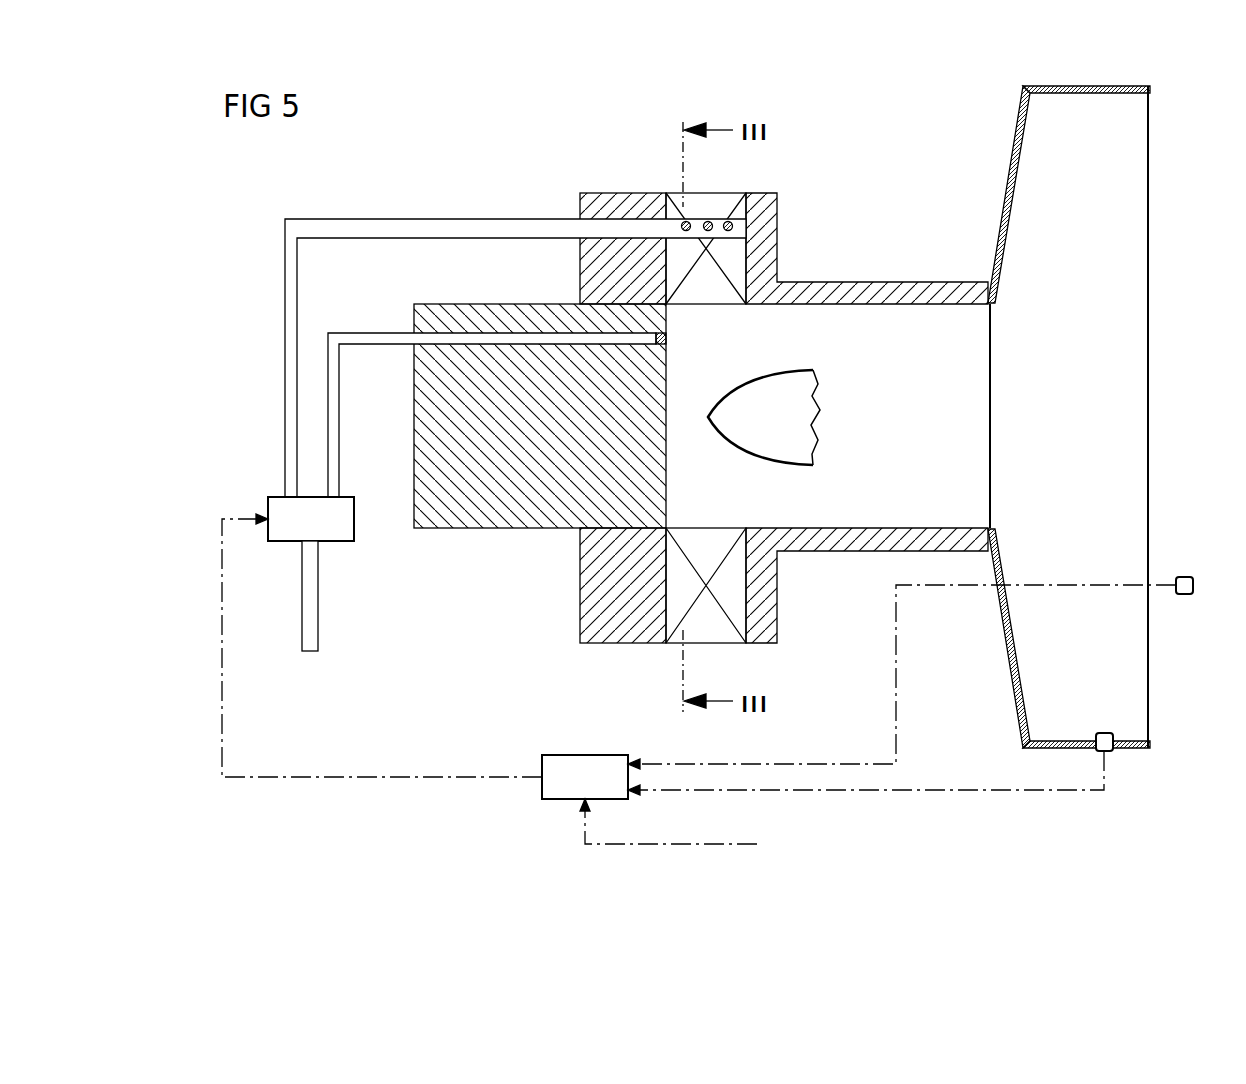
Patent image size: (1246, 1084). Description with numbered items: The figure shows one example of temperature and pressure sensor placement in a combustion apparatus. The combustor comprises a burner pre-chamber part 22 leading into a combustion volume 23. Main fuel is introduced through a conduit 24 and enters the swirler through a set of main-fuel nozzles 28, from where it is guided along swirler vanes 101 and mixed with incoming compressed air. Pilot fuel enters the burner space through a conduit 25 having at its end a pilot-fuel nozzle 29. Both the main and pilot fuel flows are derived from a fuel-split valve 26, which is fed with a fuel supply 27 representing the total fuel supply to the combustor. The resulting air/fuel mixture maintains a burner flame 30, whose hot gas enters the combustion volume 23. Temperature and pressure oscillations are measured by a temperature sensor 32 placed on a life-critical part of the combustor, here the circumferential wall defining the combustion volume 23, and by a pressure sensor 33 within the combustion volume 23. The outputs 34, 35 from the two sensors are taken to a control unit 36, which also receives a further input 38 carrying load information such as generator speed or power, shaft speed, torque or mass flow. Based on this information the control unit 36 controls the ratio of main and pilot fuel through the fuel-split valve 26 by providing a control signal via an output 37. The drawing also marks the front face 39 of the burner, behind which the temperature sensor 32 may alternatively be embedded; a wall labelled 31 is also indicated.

The burner pre-chamber part 22 is at (905, 245).
The combustion volume 23 is at (1104, 373).
The conduit 24 is at (400, 228).
The conduit 25 is at (372, 338).
The fuel-split valve 26 is at (345, 520).
The fuel supply 27 is at (313, 600).
The main-fuel nozzles 28 is at (728, 221).
The pilot-fuel nozzle 29 is at (668, 340).
The burner flame 30 is at (810, 410).
The burner wall 31 is at (668, 487).
The temperature sensor 32 is at (1105, 733).
The pressure sensor 33 is at (1193, 594).
The output 34 is at (978, 788).
The output 35 is at (965, 588).
The control unit 36 is at (585, 755).
The output 37 is at (393, 775).
The further input 38 is at (740, 843).
The front face 39 is at (648, 440).
The swirler vanes 101 is at (732, 268).